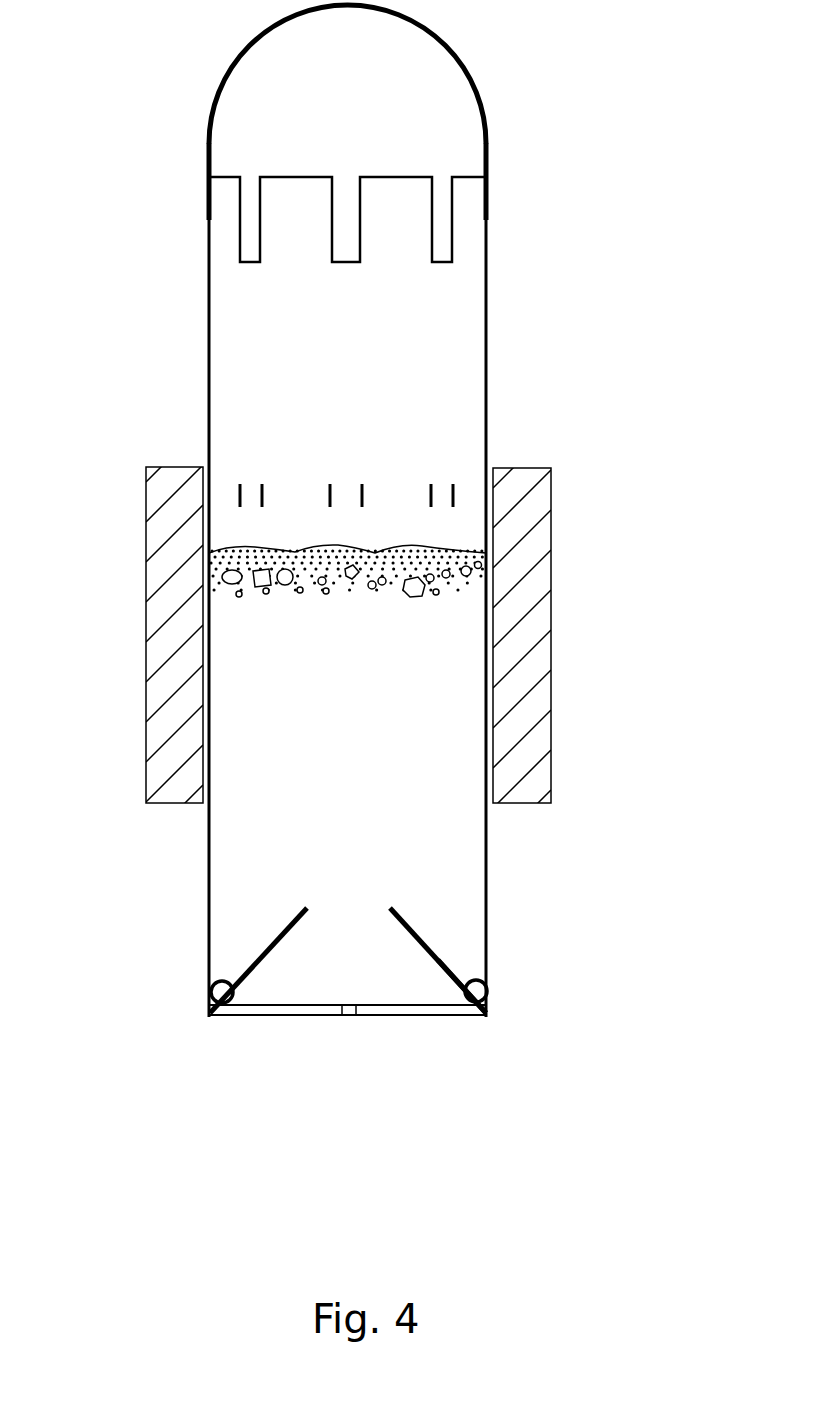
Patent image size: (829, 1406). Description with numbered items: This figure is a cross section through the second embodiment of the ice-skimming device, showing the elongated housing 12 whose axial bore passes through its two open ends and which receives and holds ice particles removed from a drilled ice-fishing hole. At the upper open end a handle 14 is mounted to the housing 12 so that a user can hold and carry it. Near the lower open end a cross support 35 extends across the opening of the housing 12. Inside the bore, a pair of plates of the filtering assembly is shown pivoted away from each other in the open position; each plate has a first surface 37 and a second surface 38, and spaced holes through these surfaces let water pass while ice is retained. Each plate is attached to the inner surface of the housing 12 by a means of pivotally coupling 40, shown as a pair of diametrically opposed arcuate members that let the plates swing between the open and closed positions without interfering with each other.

The housing 12 is at (486, 337).
The handle 14 is at (475, 85).
The cross support 35 is at (350, 1012).
The first opposed surface 37 is at (415, 925).
The second opposed surface 38 is at (438, 960).
The means of pivotally coupling 40 is at (220, 977).